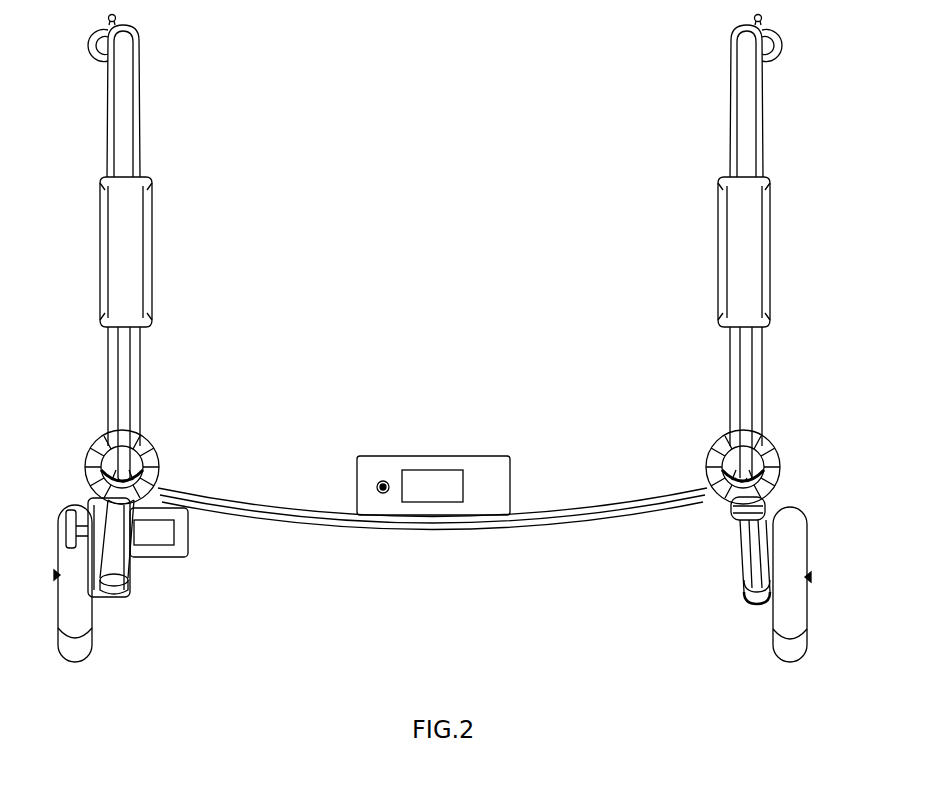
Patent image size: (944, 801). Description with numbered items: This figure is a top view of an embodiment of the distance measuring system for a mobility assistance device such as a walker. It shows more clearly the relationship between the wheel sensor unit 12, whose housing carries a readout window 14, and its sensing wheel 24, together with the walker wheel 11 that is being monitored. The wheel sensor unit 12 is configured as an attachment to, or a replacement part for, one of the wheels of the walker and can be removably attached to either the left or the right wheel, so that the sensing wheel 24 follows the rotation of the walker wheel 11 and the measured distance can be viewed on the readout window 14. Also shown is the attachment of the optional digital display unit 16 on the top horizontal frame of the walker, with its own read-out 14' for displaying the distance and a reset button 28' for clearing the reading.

The wheel 11 is at (98, 636).
The wheel sensor unit 12 is at (187, 573).
The readout window 14 is at (199, 542).
The read-out 14' is at (485, 486).
The digital display unit 16 is at (437, 448).
The sensing wheel 24 is at (63, 500).
The reset button 28' is at (364, 451).